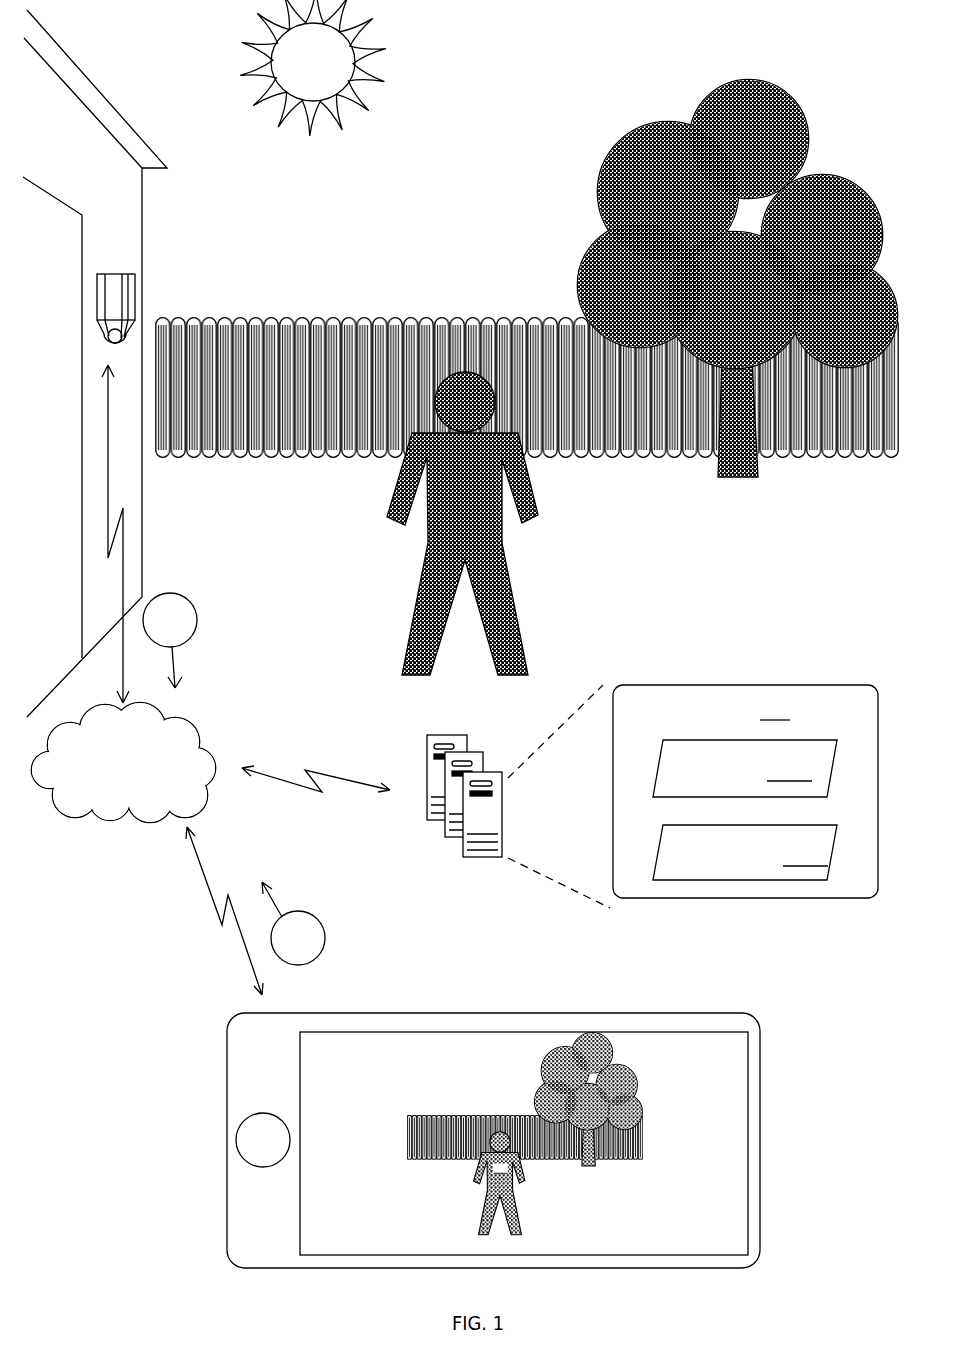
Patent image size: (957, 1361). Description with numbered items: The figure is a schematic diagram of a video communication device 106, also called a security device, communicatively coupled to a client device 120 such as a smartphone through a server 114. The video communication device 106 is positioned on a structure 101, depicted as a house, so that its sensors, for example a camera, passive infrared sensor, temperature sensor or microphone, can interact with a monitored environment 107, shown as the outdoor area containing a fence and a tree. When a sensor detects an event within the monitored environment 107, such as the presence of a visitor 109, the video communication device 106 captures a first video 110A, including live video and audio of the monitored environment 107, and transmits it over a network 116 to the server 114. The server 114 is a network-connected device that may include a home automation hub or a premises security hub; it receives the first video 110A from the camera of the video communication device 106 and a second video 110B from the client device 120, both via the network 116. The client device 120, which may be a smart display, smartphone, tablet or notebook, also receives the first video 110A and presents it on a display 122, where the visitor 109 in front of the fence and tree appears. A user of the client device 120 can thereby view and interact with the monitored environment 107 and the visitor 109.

The structure 101 is at (125, 115).
The video communication device 106 is at (117, 273).
The monitored environment 107 is at (365, 180).
The visitor 109 is at (483, 492).
The first video 110A is at (194, 631).
The second video 110B is at (322, 949).
The server 114 is at (473, 858).
The network 116 is at (139, 788).
The client device 120 is at (227, 1125).
The display 122 is at (357, 1061).